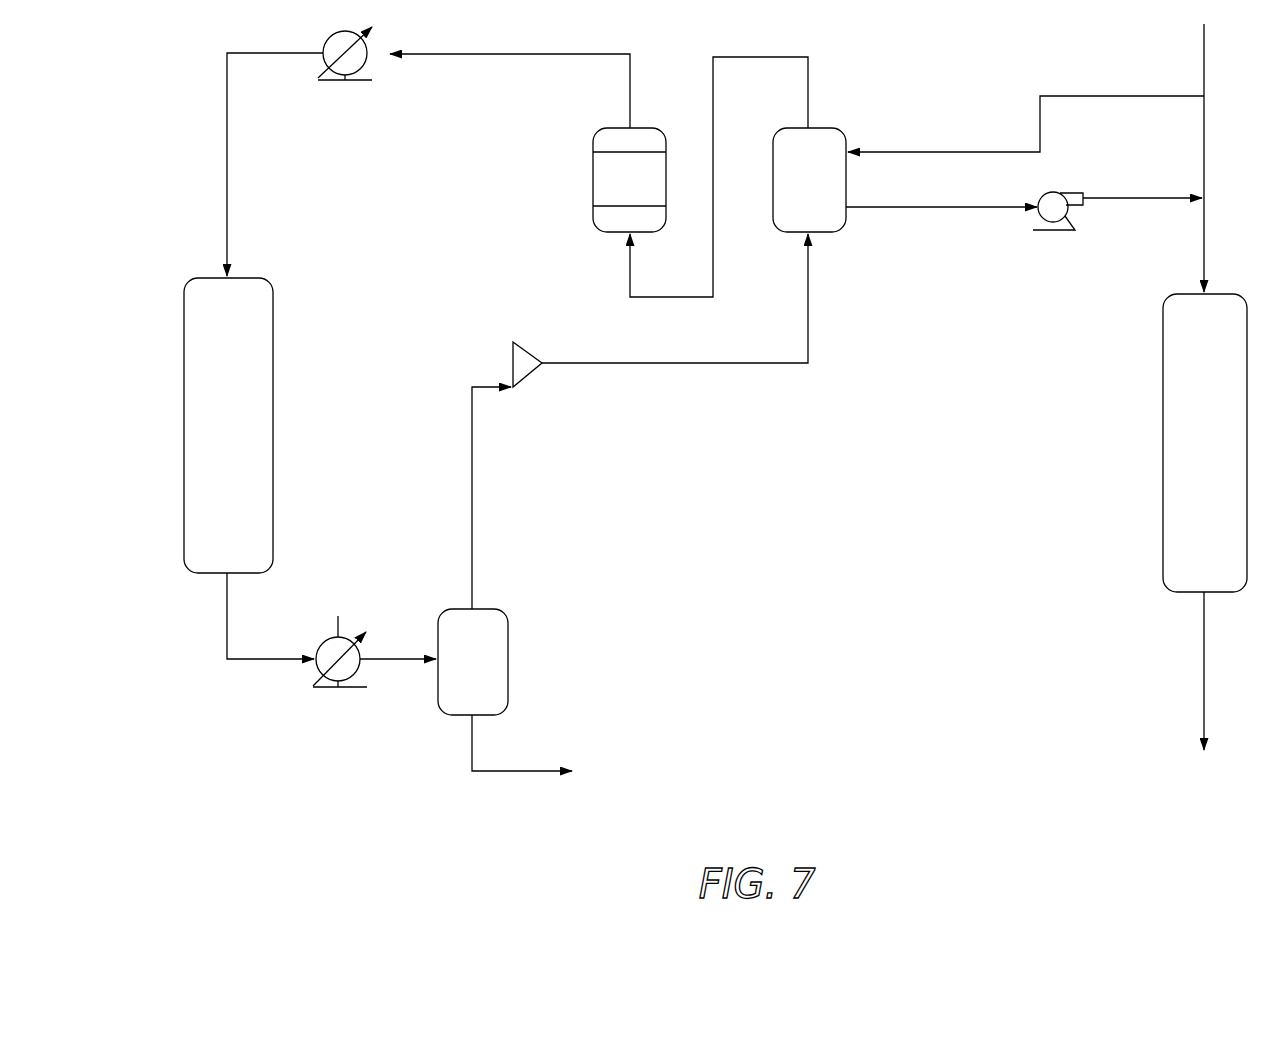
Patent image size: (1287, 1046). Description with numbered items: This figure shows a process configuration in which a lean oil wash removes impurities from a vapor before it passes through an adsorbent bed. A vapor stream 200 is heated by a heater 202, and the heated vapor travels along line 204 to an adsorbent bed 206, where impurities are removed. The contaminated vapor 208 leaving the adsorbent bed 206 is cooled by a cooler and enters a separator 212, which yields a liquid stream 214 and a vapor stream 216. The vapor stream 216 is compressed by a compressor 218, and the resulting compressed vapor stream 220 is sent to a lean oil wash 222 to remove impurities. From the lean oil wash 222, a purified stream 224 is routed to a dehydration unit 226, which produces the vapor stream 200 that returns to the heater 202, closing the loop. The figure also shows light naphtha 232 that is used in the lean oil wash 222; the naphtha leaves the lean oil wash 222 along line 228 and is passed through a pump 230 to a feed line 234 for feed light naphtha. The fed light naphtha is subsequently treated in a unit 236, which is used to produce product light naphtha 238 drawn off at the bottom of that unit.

The vapor stream 200 is at (517, 52).
The heater 202 is at (345, 80).
The feed line 204 is at (227, 166).
The adsorbent bed 206 is at (228, 425).
The contaminated vapor 208 is at (227, 617).
The separator 212 is at (473, 662).
The liquid stream 214 is at (473, 742).
The vapor stream 216 is at (472, 500).
The compressor 218 is at (520, 348).
The compressed vapor stream 220 is at (612, 363).
The lean oil wash 222 is at (809, 180).
The purified stream 224 is at (760, 57).
The dehydration unit 226 is at (629, 180).
The line 228 is at (998, 209).
The pump 230 is at (1068, 192).
The light naphtha 232 is at (1123, 96).
The feed line 234 is at (1204, 57).
The unit 236 is at (1205, 443).
The product light naphtha 238 is at (1204, 670).